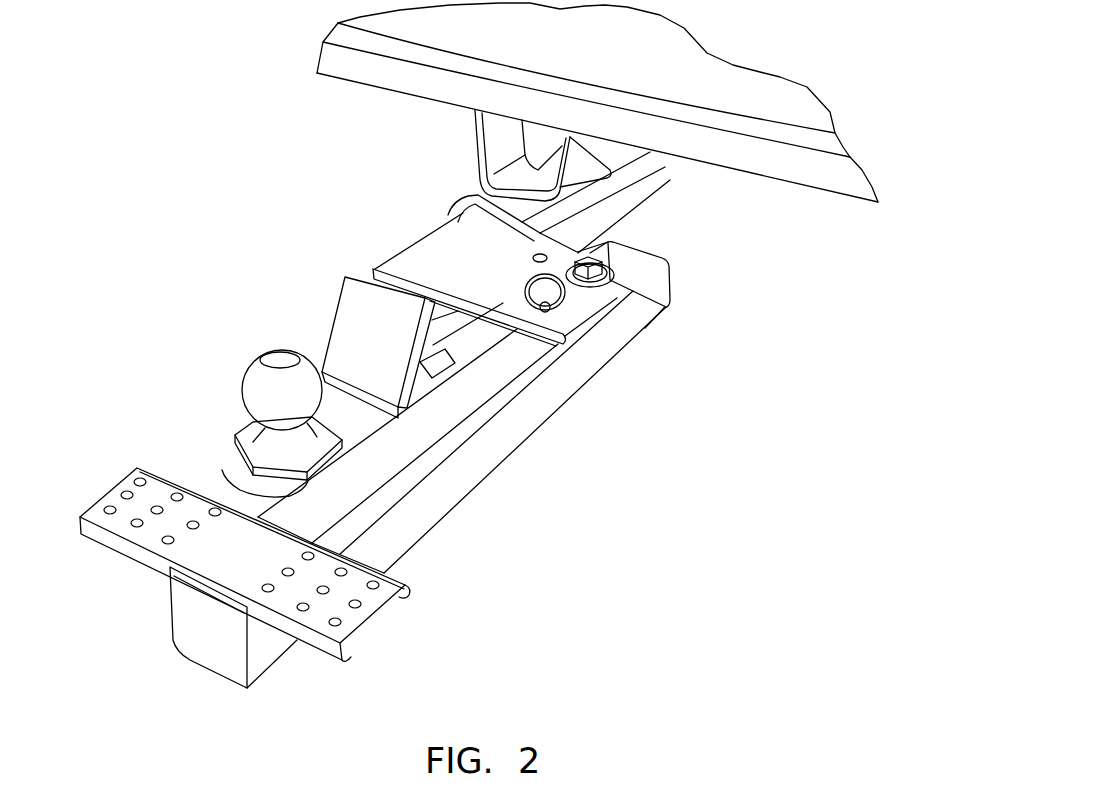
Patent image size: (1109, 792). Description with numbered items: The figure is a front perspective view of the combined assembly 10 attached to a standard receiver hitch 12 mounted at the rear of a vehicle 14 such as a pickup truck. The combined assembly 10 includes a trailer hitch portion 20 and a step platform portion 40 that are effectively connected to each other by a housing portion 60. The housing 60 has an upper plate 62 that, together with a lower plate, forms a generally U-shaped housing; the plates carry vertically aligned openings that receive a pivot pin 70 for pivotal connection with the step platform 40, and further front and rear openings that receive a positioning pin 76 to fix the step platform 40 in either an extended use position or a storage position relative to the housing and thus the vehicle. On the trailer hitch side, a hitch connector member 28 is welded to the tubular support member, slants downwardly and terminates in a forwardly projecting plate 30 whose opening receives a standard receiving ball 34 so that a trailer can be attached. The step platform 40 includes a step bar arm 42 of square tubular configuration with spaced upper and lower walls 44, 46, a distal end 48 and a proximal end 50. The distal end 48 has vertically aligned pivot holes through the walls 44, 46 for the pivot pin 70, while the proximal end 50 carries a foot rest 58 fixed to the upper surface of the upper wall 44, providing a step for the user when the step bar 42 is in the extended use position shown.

The combined assembly 10 is at (260, 300).
The receiver hitch 12 is at (470, 196).
The vehicle 14 is at (812, 87).
The trailer hitch portion 20 is at (357, 265).
The hitch connector member 28 is at (384, 348).
The forwardly projecting plate 30 is at (226, 471).
The receiving ball 34 is at (242, 384).
The step platform portion 40 is at (514, 451).
The step bar arm 42 is at (432, 497).
The upper wall 44 is at (435, 443).
The lower wall 46 is at (648, 333).
The distal end 48 is at (672, 272).
The proximal end 50 is at (268, 673).
The foot rest 58 is at (357, 617).
The housing portion 60 is at (385, 262).
The upper plate 62 is at (472, 279).
The pivot pin 70 is at (598, 258).
The positioning pin 76 is at (560, 303).